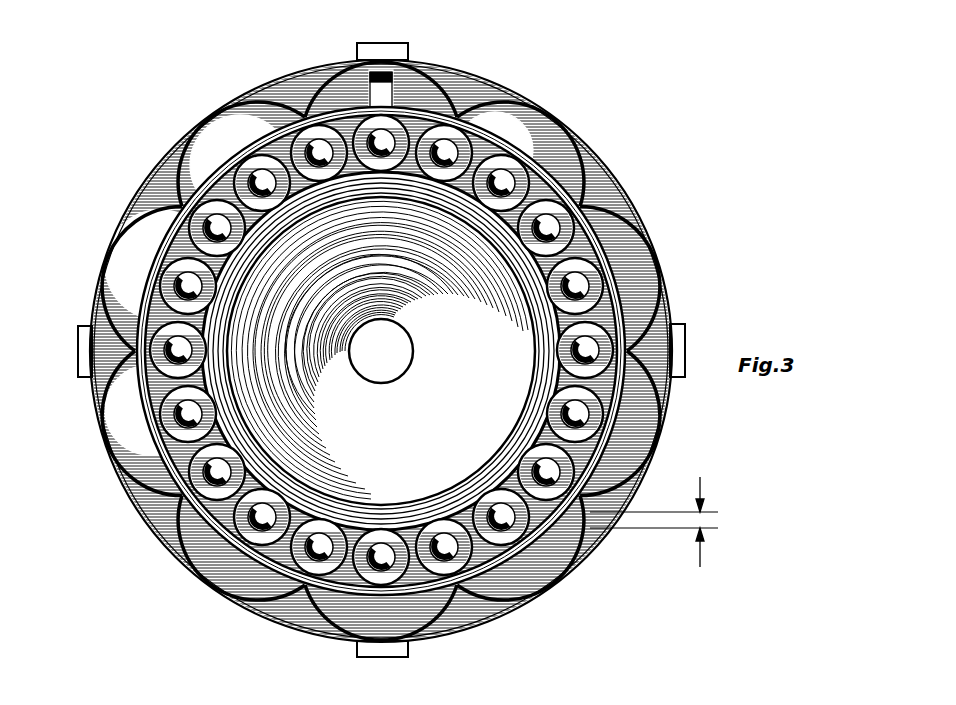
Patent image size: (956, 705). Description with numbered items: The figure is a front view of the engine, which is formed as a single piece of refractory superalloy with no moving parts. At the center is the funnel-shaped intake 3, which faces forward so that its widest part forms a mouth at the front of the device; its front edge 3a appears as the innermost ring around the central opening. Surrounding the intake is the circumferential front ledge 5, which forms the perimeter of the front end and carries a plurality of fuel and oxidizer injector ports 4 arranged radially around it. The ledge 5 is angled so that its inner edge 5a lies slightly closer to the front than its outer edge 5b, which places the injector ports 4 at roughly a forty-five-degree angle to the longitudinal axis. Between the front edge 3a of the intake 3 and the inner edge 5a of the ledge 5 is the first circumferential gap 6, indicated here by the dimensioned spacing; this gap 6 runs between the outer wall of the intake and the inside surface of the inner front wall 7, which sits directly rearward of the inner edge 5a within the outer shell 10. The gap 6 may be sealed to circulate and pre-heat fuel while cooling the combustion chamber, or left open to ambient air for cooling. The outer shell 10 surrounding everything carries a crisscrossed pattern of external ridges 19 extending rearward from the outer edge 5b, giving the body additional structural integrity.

The funnel-shaped intake 3 is at (477, 293).
The front edge of intake 3a is at (333, 203).
The fuel/oxidizer injector port 4 is at (558, 222).
The circumferential front ledge 5 is at (487, 143).
The inner edge of circumferential front ledge 5a is at (423, 173).
The outer edge of circumferential front ledge 5b is at (527, 157).
The first circumferential gap 6 is at (654, 533).
The inner front wall 7 is at (222, 394).
The outer shell 10 is at (153, 513).
The external ridges 19 is at (535, 102).